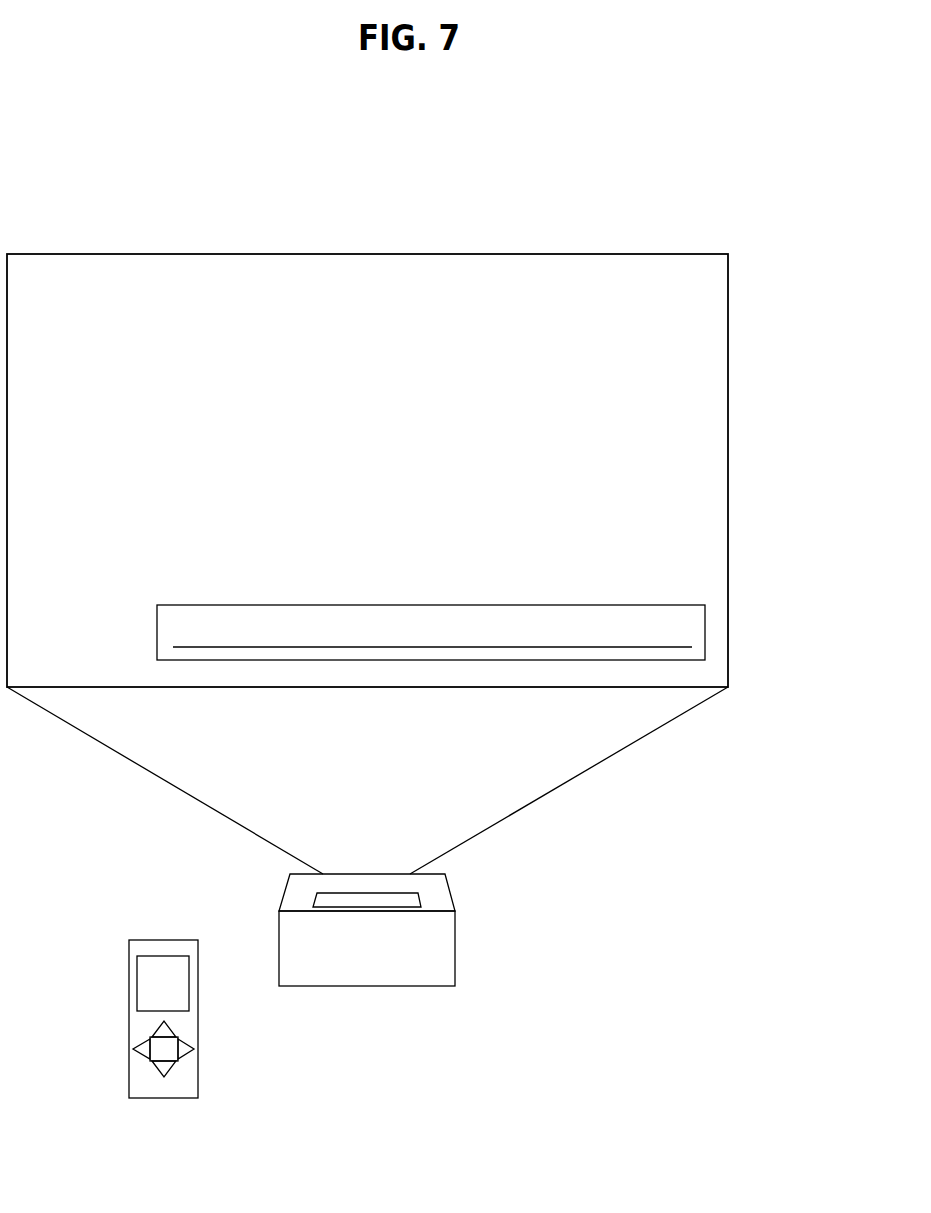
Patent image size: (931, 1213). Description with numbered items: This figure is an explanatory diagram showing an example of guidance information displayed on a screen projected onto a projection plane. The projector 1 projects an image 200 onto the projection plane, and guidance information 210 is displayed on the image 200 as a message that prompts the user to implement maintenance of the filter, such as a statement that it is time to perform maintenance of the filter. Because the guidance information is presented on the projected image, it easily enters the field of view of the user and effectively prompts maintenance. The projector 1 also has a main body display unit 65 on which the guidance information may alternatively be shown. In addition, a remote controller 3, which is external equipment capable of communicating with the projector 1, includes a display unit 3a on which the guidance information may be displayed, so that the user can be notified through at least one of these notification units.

The image 200 is at (728, 404).
The guidance information 210 is at (705, 631).
The projector 1 is at (402, 928).
The main body display unit 65 is at (420, 900).
The remote controller 3 is at (128, 1019).
The display unit 3a is at (149, 980).